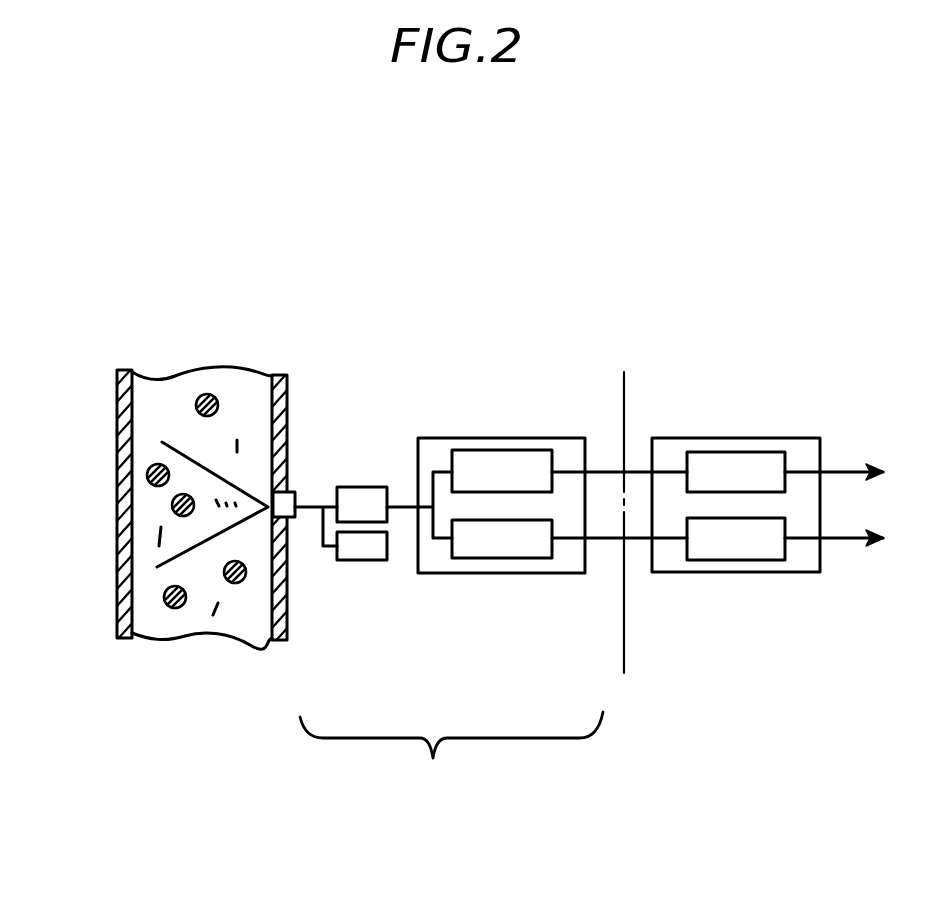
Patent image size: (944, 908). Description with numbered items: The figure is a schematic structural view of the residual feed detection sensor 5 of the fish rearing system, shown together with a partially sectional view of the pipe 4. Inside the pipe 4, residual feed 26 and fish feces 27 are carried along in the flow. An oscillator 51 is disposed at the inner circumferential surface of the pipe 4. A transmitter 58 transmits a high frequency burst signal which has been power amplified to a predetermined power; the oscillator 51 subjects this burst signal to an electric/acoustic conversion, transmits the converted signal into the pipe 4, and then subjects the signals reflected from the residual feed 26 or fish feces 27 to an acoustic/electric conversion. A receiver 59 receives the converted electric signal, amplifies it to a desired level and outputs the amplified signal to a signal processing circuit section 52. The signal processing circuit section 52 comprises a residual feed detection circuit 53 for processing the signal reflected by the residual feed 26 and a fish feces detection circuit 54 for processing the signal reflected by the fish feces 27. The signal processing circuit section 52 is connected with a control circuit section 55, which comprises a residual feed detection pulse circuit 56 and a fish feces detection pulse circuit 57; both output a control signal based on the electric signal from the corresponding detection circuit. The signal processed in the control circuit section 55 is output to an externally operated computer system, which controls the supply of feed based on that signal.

The pipe 4 is at (275, 377).
The residual feed detection sensor 5 is at (451, 763).
The residual feed 26 is at (148, 470).
The fish feces 27 is at (155, 536).
The oscillator 51 is at (293, 517).
The signal processing circuit section 52 is at (504, 477).
The residual feed detection circuit 53 is at (517, 462).
The fish feces detection circuit 54 is at (508, 540).
The control circuit section 55 is at (768, 475).
The residual feed detection pulse circuit 56 is at (760, 465).
The fish feces detection pulse circuit 57 is at (734, 540).
The transmitter 58 is at (362, 560).
The receiver 59 is at (358, 487).